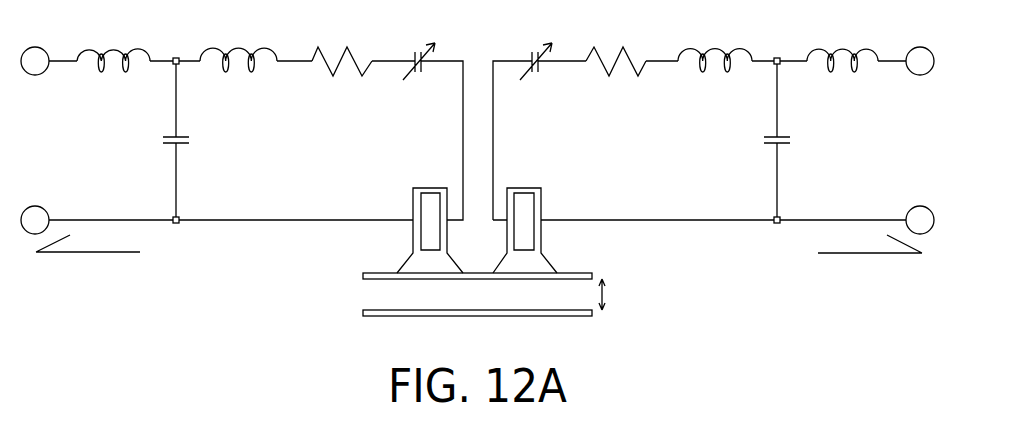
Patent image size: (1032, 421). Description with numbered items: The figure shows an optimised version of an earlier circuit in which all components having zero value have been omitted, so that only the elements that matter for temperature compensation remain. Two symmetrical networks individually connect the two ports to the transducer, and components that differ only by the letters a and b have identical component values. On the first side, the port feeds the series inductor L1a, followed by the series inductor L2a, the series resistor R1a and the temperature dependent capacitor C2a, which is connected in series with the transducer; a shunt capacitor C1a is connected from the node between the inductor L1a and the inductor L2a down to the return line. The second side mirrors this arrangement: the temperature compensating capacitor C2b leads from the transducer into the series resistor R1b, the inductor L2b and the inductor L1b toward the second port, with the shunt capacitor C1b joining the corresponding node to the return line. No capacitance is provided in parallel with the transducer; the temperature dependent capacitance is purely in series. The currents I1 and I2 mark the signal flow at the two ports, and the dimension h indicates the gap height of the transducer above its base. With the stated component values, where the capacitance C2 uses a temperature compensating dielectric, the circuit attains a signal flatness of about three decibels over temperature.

The inductor L1 (side a) L1a is at (113, 41).
The inductor L2 (side a) L2a is at (238, 41).
The resistor R1 (side a) R1a is at (342, 43).
The temperature compensating capacitor C2 (side a) C2a is at (410, 45).
The shunt capacitor C1 (side a) C1a is at (197, 139).
The temperature compensating capacitor C2 (side b) C2b is at (527, 45).
The resistor R1 (side b) R1b is at (616, 43).
The inductor L2 (side b) L2b is at (715, 41).
The inductor L1 (side b) L1b is at (842, 41).
The shunt capacitor C1 (side b) C1b is at (798, 139).
The input current I1 is at (88, 237).
The output current I2 is at (870, 238).
The gap height h is at (613, 295).